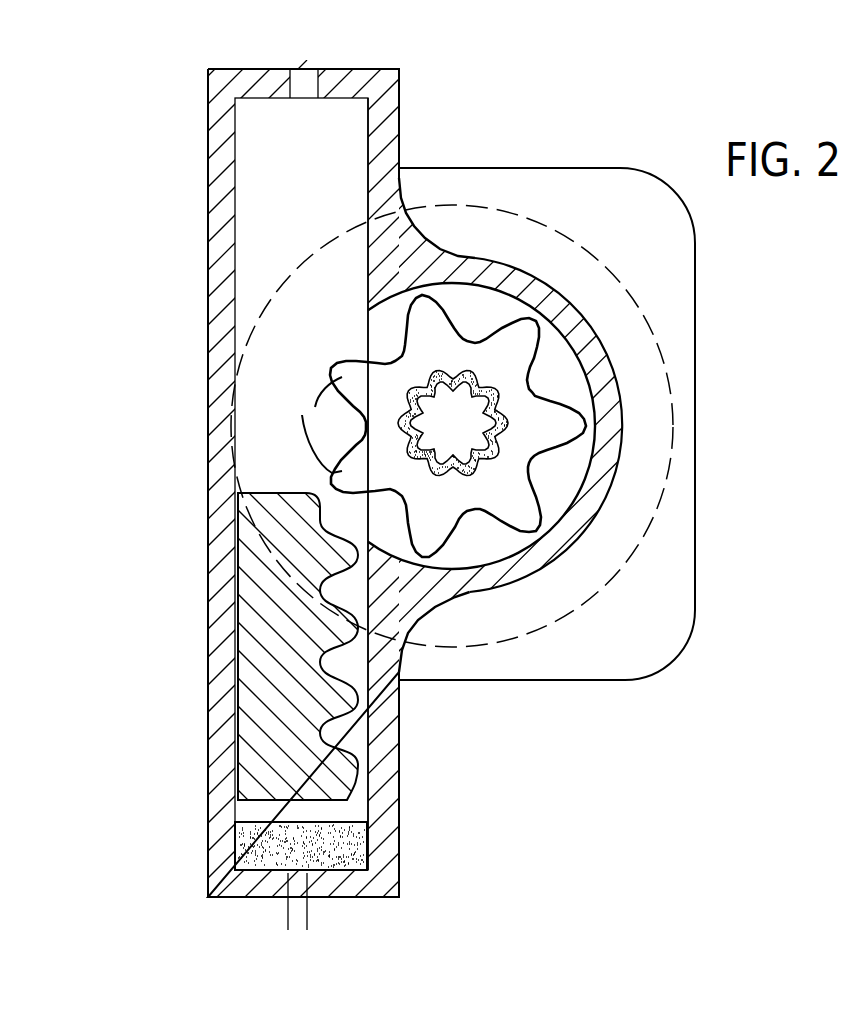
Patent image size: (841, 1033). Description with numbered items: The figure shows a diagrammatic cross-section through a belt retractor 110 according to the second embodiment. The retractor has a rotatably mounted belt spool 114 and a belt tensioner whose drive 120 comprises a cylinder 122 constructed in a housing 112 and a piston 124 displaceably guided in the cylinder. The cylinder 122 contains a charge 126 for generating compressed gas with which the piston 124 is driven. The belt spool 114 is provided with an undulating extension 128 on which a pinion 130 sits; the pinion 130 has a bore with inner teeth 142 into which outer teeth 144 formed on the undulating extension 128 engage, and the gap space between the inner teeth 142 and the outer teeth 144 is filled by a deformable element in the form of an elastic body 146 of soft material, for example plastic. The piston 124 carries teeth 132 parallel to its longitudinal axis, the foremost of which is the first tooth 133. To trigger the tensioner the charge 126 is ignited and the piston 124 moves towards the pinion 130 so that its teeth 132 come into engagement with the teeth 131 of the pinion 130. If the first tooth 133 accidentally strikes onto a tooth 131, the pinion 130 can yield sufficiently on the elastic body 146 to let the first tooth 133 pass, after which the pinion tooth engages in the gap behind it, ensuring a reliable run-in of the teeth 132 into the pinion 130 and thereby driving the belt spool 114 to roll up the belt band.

The belt retractor 110 is at (540, 138).
The housing 112 is at (207, 628).
The belt spool 114 is at (602, 268).
The drive 120 is at (196, 512).
The cylinder 122 is at (250, 228).
The piston 124 is at (250, 700).
The charge 126 is at (350, 848).
The undulating extension 128 is at (462, 457).
The pinion 130 is at (545, 503).
The teeth of the pinion 131 is at (305, 410).
The teeth of the piston 132 is at (357, 698).
The first tooth 133 is at (353, 550).
The inner teeth 142 is at (426, 390).
The outer teeth 144 is at (453, 392).
The elastic body 146 is at (510, 426).